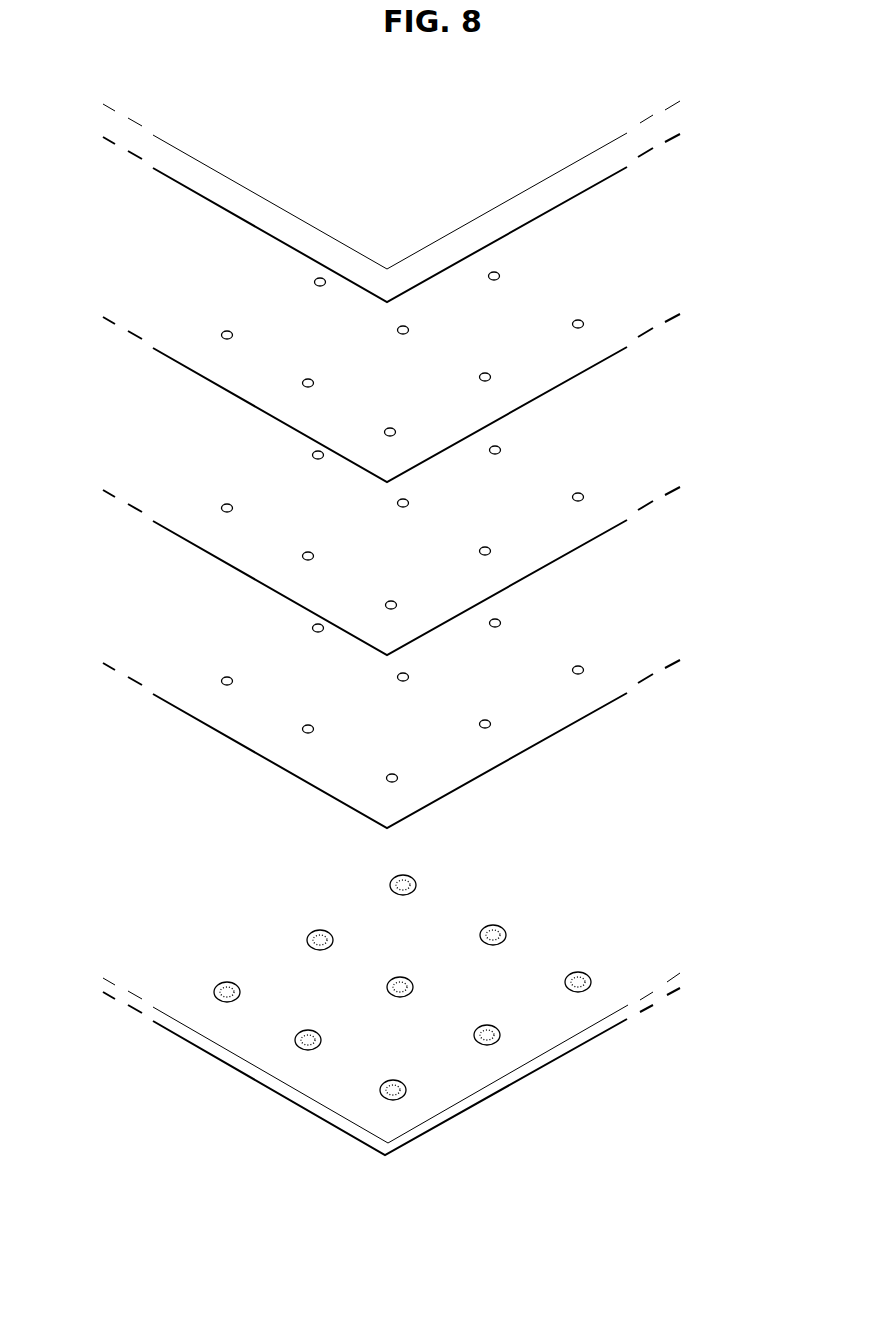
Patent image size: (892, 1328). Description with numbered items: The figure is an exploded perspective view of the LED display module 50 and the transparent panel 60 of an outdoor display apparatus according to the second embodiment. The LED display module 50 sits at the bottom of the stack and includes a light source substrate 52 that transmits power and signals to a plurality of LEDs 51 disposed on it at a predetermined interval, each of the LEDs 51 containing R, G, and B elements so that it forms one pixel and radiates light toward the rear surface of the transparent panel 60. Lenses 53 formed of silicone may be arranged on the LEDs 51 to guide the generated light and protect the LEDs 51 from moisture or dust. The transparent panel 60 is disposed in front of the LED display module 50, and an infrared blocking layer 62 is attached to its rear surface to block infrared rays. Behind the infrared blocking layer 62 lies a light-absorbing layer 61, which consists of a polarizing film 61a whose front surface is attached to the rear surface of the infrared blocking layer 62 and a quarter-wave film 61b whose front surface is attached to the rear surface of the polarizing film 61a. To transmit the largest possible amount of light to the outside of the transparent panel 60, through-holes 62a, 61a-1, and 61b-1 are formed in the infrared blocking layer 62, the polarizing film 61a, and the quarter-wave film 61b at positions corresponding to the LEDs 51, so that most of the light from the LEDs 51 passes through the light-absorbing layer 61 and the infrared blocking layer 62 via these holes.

The LED display module 50 is at (391, 1051).
The LEDs 51 is at (499, 1027).
The light source substrate 52 is at (447, 1090).
The lenses 53 is at (228, 1003).
The transparent panel 60 is at (562, 142).
The light-absorbing layer 61 is at (448, 657).
The polarizing film 61a is at (422, 571).
The through-holes 61a-1 is at (397, 603).
The λ/4 film 61b is at (422, 744).
The through-holes 61b-1 is at (398, 776).
The infrared blocking layer 62 is at (416, 398).
The through-holes 62a is at (491, 375).